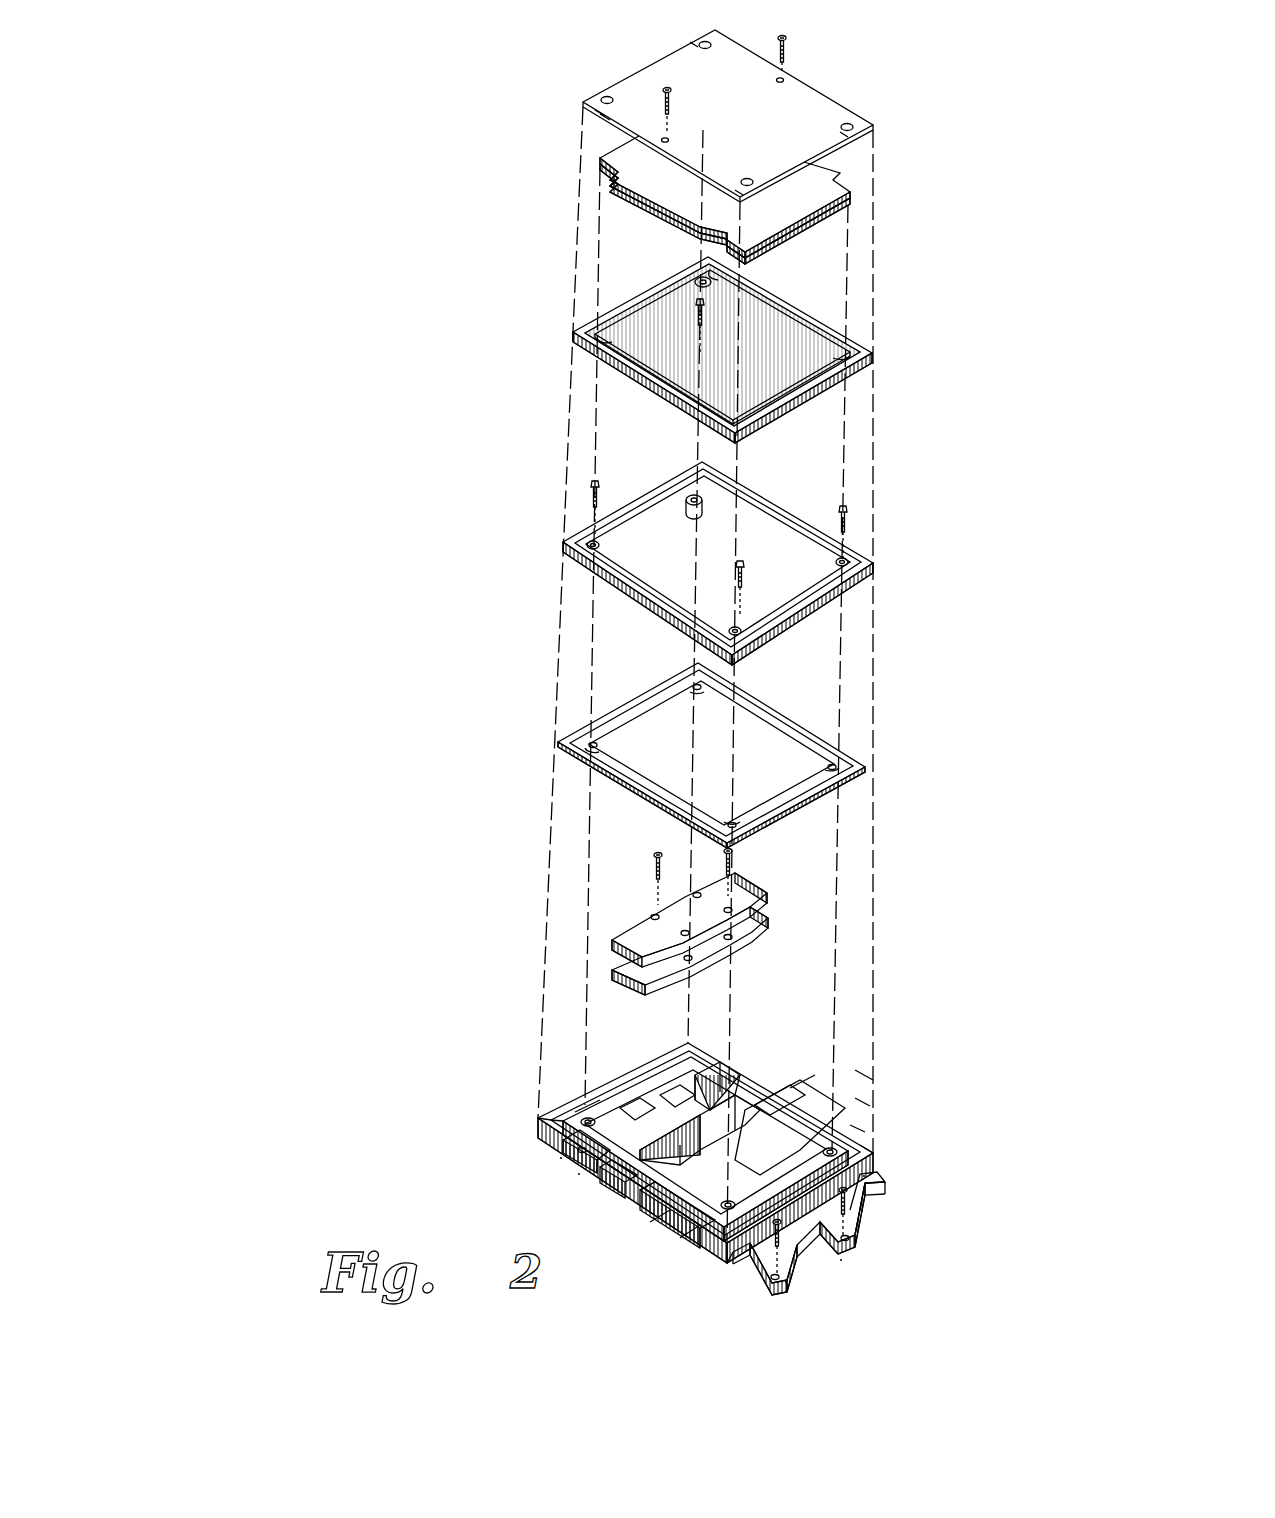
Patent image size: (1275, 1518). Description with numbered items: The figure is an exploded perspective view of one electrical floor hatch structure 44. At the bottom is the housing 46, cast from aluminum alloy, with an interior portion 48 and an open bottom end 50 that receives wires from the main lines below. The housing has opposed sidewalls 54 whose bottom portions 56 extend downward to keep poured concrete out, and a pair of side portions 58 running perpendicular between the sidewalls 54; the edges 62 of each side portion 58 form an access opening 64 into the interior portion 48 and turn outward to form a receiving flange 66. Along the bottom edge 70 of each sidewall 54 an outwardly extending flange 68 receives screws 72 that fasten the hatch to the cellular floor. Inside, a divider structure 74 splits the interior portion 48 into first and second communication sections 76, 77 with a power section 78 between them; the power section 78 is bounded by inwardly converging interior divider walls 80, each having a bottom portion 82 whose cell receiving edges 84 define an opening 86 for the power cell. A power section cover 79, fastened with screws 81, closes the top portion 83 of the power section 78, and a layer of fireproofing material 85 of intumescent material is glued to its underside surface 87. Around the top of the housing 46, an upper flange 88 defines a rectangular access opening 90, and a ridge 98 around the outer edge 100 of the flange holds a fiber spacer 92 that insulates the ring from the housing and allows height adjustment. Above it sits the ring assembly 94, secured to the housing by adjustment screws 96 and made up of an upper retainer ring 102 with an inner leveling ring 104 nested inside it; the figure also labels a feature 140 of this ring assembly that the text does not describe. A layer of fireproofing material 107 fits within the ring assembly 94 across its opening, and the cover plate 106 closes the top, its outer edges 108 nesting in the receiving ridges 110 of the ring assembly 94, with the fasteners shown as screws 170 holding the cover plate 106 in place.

The hatch structure 44 is at (538, 172).
The ring assembly 94 is at (873, 280).
The cover plate 106 is at (810, 114).
The screws 170 is at (662, 90).
The outer edges 108 is at (612, 182).
The layer of fireproofing material 107 is at (820, 200).
The inner leveling ring 104 is at (665, 355).
The receiving ridges 110 is at (610, 305).
The adjustment screws 96 is at (695, 315).
The upper retainer ring 102 is at (830, 595).
The corner boss 140 is at (655, 568).
The fire retardant member 92 is at (790, 725).
The screws 81 is at (648, 858).
The power section cover 79 is at (640, 927).
The layer of fireproofing material 85 is at (770, 918).
The underside surface 87 is at (612, 958).
The housing 46 is at (878, 1170).
The interior portion 48 is at (794, 1169).
The divider structure 74 is at (735, 1120).
The top portion 83 is at (715, 1130).
The power section 78 is at (757, 1108).
The access opening 64 is at (797, 1090).
The sidewalls 54 is at (620, 1110).
The bottom portions 56 is at (665, 1105).
The side portions 58 is at (560, 1140).
The interior divider walls 80 is at (560, 1160).
The flange 68 is at (570, 1160).
The bottom edge 70 is at (575, 1160).
The screws 72 is at (870, 1200).
The opening 86 is at (748, 1252).
The receiving flange 66 is at (738, 1258).
The open bottom end 50 is at (703, 1250).
The cell receiving edges 84 is at (685, 1237).
The bottom portion 82 is at (650, 1190).
The edges 62 is at (620, 1170).
The first communication section 76 is at (548, 1108).
The ridge 98 is at (577, 1105).
The outer edge 100 is at (590, 1100).
The upper flange 88 is at (860, 1075).
The second communication section 77 is at (860, 1100).
The top rectangular shaped access opening 90 is at (858, 1125).